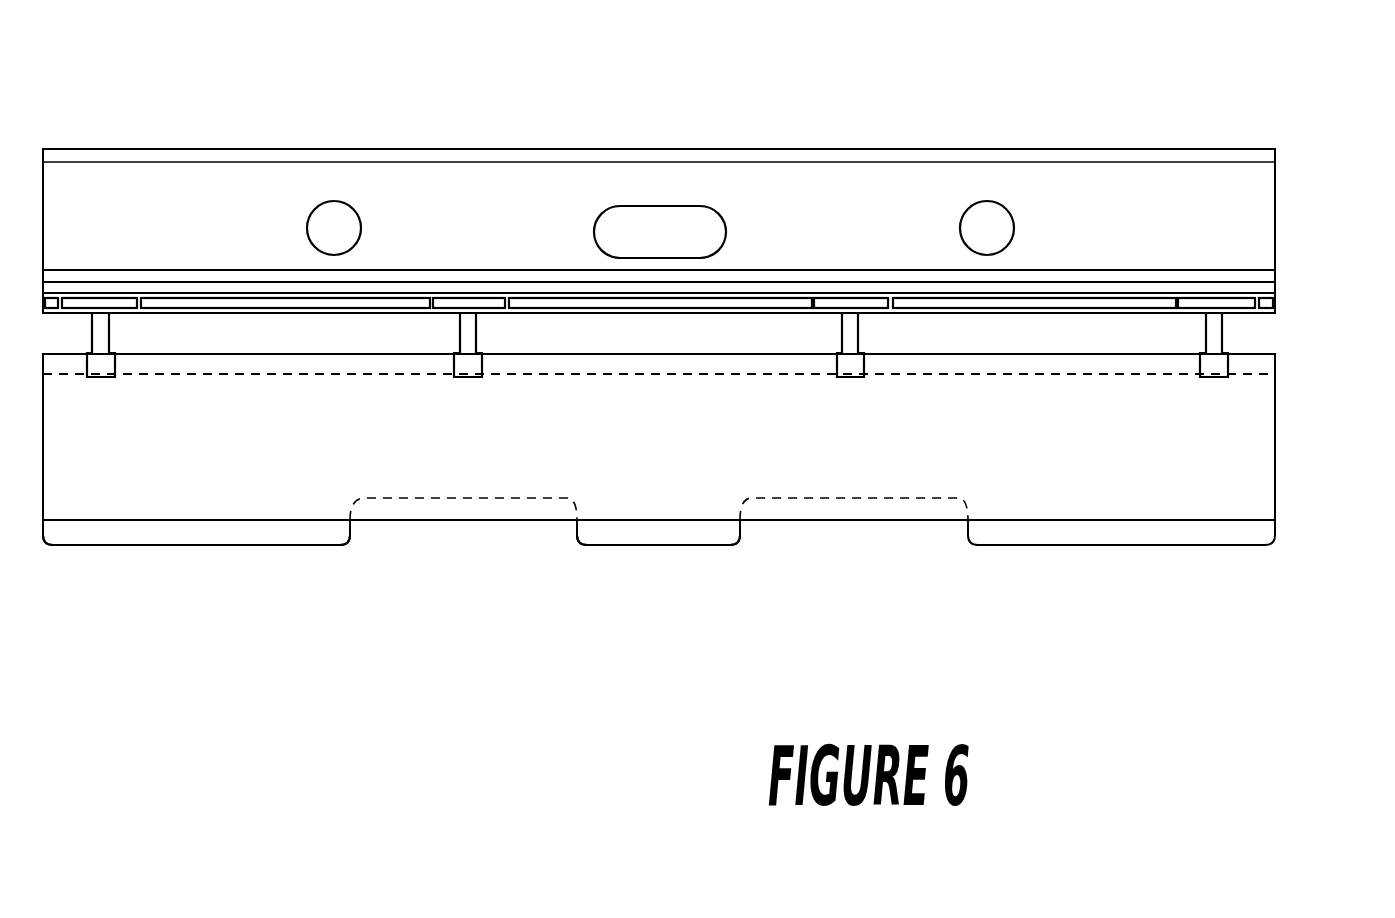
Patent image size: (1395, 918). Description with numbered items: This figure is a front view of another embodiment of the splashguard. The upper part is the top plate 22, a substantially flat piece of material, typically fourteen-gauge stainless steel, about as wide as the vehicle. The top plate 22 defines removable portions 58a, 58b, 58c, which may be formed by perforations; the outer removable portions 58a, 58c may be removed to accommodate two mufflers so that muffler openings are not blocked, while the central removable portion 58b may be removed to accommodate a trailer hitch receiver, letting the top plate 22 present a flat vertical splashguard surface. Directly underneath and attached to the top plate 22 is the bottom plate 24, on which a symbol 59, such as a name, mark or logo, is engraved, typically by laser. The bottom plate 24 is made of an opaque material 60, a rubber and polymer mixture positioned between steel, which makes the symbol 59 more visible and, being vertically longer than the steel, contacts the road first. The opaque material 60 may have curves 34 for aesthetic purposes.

The top plate 22 is at (1247, 205).
The bottom plate 24 is at (642, 500).
The curves 34 is at (353, 543).
The removable portion 58a is at (345, 218).
The removable portion 58b is at (638, 230).
The removable portion 58c is at (985, 218).
The symbol 59 is at (1185, 470).
The opaque material 60 is at (730, 543).